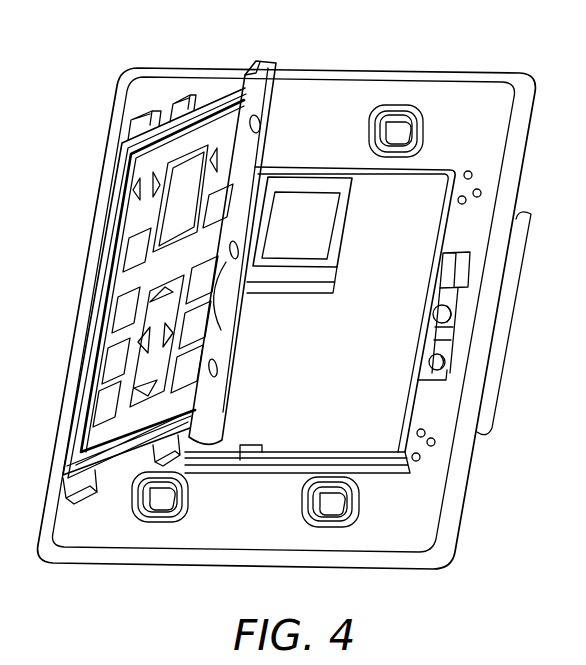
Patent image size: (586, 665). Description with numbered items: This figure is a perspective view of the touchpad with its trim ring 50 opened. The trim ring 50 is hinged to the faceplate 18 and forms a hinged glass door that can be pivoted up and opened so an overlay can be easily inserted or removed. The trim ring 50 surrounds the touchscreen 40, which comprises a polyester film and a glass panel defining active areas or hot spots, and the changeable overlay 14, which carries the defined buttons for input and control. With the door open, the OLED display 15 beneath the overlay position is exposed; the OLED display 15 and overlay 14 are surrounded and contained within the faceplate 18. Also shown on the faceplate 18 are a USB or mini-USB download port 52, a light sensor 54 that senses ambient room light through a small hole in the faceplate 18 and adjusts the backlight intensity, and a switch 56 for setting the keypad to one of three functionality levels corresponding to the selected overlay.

The changeable overlay 14 is at (120, 317).
The organic light emitting diode display 15 is at (283, 203).
The faceplate 18 is at (425, 522).
The touchscreen 40 is at (125, 276).
The trim ring 50 is at (193, 105).
The USB or mini-USB download port 52 is at (450, 253).
The light sensor 54 is at (445, 304).
The switch 56 is at (450, 350).